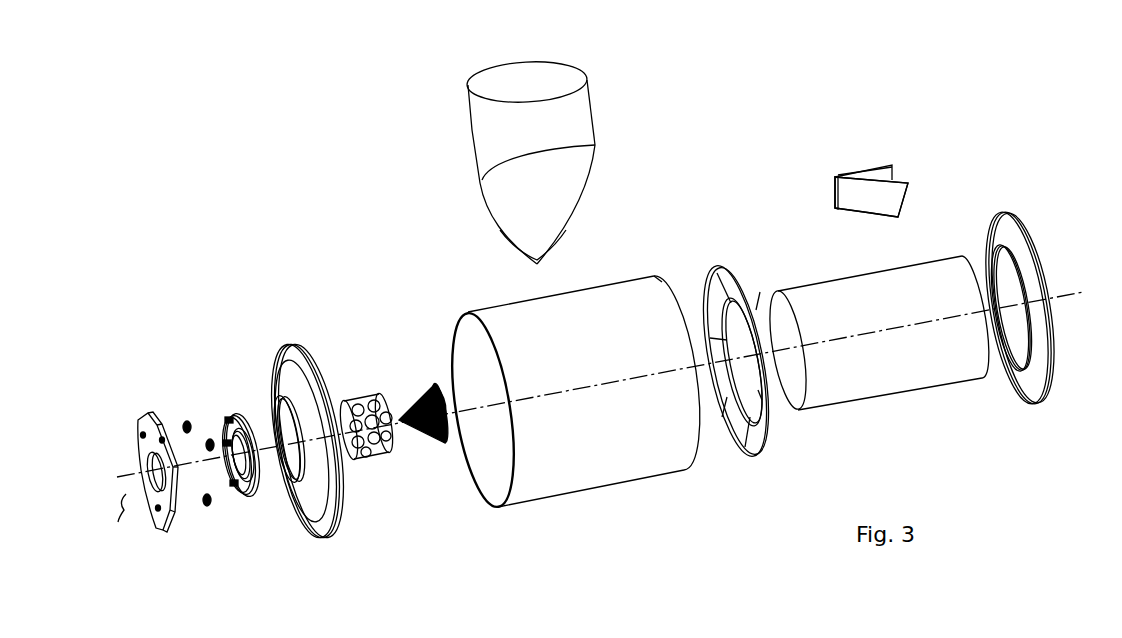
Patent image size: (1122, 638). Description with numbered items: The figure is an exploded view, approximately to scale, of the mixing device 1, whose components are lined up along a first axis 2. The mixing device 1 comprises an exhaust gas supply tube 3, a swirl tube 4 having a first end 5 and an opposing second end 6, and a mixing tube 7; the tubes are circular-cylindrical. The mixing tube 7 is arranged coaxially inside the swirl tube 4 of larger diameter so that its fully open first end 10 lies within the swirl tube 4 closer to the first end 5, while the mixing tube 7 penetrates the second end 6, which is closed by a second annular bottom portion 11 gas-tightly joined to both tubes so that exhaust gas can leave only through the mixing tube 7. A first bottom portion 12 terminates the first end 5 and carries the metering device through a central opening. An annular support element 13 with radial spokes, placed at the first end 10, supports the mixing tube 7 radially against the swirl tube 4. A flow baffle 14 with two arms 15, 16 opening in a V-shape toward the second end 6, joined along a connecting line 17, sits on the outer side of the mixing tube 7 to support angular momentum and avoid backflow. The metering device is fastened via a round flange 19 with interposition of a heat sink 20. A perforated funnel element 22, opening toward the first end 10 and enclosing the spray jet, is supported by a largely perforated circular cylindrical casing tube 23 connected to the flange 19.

The mixing device 1 is at (295, 120).
The first axis 2 is at (114, 521).
The exhaust gas supply tube 3 is at (590, 101).
The swirl tube 4 is at (482, 298).
The first end 5 is at (449, 338).
The second end 6 is at (661, 275).
The mixing tube 7 is at (797, 290).
The first end 10 is at (780, 309).
The second annular bottom portion 11 is at (1001, 211).
The first bottom portion 12 is at (290, 345).
The support element 13 is at (734, 264).
The flow baffle 14 is at (872, 140).
The arm 15 is at (892, 170).
The arm 16 is at (893, 204).
The connecting line 17 is at (834, 193).
The flange 19 is at (240, 412).
The heat sink 20 is at (156, 416).
The funnel element 22 is at (419, 392).
The casing tube 23 is at (366, 392).